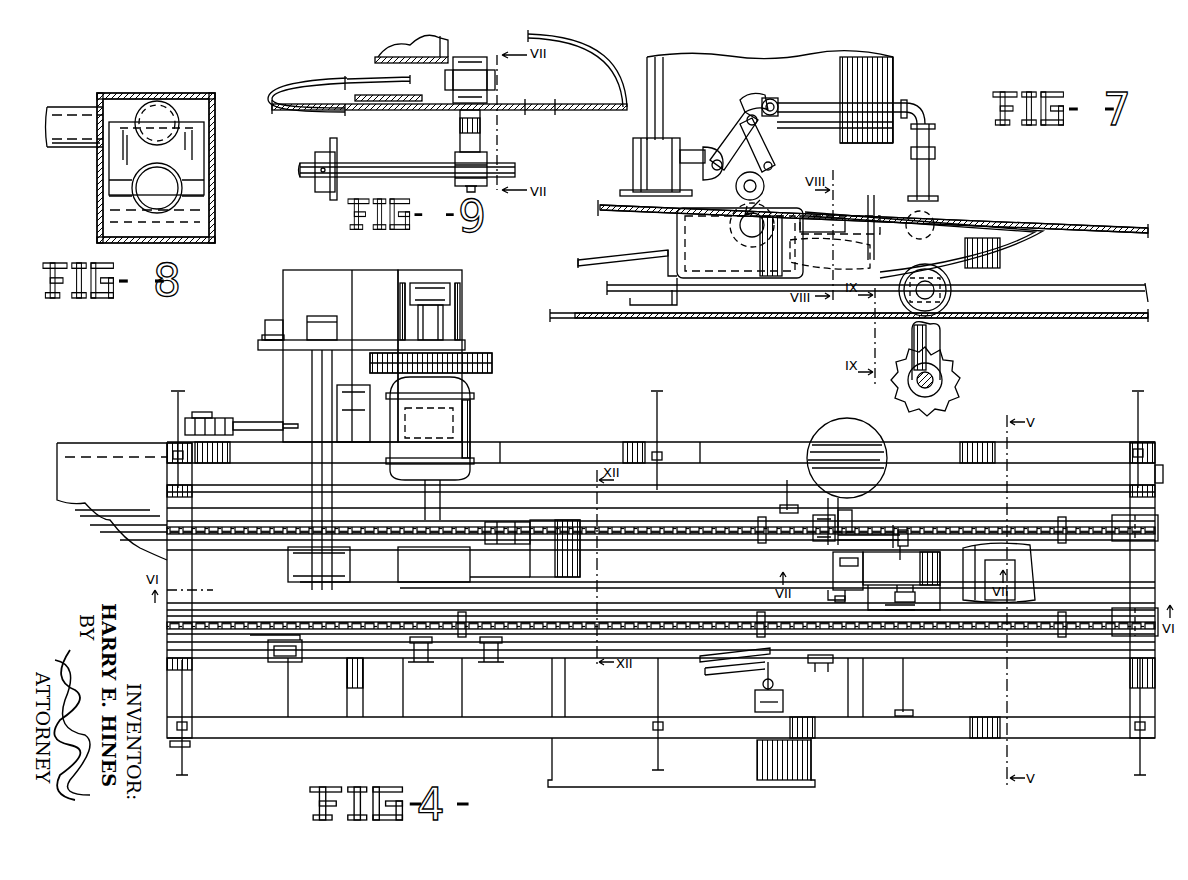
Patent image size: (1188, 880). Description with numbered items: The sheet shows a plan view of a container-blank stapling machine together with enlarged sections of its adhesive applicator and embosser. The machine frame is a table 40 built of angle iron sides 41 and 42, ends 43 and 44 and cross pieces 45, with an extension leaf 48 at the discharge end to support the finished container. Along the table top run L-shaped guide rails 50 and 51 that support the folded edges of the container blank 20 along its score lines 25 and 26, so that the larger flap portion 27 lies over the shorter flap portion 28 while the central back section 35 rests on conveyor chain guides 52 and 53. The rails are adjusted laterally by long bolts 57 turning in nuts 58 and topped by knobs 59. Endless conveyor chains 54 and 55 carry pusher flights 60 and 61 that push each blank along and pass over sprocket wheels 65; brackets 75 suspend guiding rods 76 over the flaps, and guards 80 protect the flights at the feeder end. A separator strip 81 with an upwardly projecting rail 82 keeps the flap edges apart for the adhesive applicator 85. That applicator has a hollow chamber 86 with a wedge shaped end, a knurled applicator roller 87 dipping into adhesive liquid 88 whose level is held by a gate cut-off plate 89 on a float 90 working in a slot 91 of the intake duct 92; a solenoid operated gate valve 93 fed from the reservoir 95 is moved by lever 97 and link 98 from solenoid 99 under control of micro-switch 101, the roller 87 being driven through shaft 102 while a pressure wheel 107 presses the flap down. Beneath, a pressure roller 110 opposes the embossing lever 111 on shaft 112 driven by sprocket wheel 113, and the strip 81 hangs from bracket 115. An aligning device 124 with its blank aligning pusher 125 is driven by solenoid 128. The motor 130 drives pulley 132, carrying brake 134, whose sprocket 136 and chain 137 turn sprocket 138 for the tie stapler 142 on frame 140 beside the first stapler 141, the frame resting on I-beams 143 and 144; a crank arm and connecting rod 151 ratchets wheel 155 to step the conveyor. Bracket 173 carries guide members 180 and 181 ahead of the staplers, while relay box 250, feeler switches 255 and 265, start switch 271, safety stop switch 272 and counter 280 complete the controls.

In FIG. 9, the container blank 20 is at (538, 98).
In FIG. 7, the container blank 20 is at (1018, 213).
In FIG. 9, the score line 25 is at (615, 112).
In FIG. 9, the score line 26 is at (285, 112).
In FIG. 9, the larger flap portion 27 is at (575, 40).
In FIG. 7, the larger flap portion 27 is at (612, 192).
In FIG. 4, the larger flap portion 27 is at (1032, 560).
In FIG. 9, the shorter flap portion 28 is at (366, 80).
In FIG. 7, the shorter flap portion 28 is at (607, 288).
In FIG. 4, the shorter flap portion 28 is at (1060, 548).
In FIG. 9, the central back section 35 is at (512, 98).
In FIG. 7, the central back section 35 is at (1020, 320).
In FIG. 4, the central back section 35 is at (1032, 589).
In FIG. 4, the table 40 is at (1150, 565).
In FIG. 4, the side 41 is at (748, 435).
In FIG. 4, the side 42 is at (880, 742).
In FIG. 4, the end 43 is at (170, 685).
In FIG. 4, the end 44 is at (1155, 675).
In FIG. 4, the cross piece 45 is at (363, 695).
In FIG. 4, the extension leaf 48 is at (118, 494).
In FIG. 4, the guide rail 50 is at (192, 645).
In FIG. 4, the guide rail 51 is at (243, 484).
In FIG. 4, the conveyor chain guide 52 is at (1075, 538).
In FIG. 4, the conveyor chain guide 53 is at (990, 640).
In FIG. 4, the conveyor sprocket chain 54 is at (215, 545).
In FIG. 4, the conveyor sprocket chain 55 is at (245, 618).
In FIG. 4, the long bolt 57 is at (176, 402).
In FIG. 4, the nut 58 is at (187, 728).
In FIG. 4, the adjusting knob 59 is at (176, 390).
In FIG. 4, the pusher flight 60 is at (468, 481).
In FIG. 4, the pusher flight 61 is at (460, 612).
In FIG. 4, the sprocket wheel 65 is at (901, 580).
In FIG. 4, the bracket 75 is at (815, 672).
In FIG. 4, the guiding rod 76 is at (724, 605).
In FIG. 4, the conveyor flight guard 80 is at (1140, 515).
In FIG. 9, the separator strip 81 is at (385, 100).
In FIG. 7, the separator strip 81 is at (575, 320).
In FIG. 4, the separator strip 81 is at (652, 583).
In FIG. 4, the upwardly projecting rail 82 is at (702, 582).
In FIG. 7, the adhesive applicator 85 is at (960, 200).
In FIG. 8, the hollow chamber 86 is at (214, 105).
In FIG. 9, the hollow chamber 86 is at (378, 52).
In FIG. 7, the hollow chamber 86 is at (980, 232).
In FIG. 7, the applicator roller 87 is at (737, 228).
In FIG. 4, the applicator roller 87 is at (861, 591).
In FIG. 8, the adhesive liquid 88 is at (188, 232).
In FIG. 7, the adhesive liquid 88 is at (847, 255).
In FIG. 8, the gate cut-off plate 89 is at (190, 143).
In FIG. 7, the gate cut-off plate 89 is at (860, 215).
In FIG. 8, the float 90 is at (181, 180).
In FIG. 7, the float 90 is at (920, 240).
In FIG. 8, the slot 91 is at (178, 110).
In FIG. 7, the slot 91 is at (870, 195).
In FIG. 8, the intake duct 92 is at (66, 104).
In FIG. 7, the intake duct 92 is at (920, 108).
In FIG. 4, the intake duct 92 is at (880, 535).
In FIG. 7, the solenoid operated gate valve 93 is at (776, 100).
In FIG. 4, the solenoid operated gate valve 93 is at (855, 480).
In FIG. 7, the adhesive supply reservoir 95 is at (893, 65).
In FIG. 4, the adhesive supply reservoir 95 is at (815, 432).
In FIG. 7, the lever 97 is at (775, 150).
In FIG. 7, the link 98 is at (735, 118).
In FIG. 7, the solenoid 99 is at (663, 135).
In FIG. 4, the solenoid 99 is at (825, 528).
In FIG. 4, the micro-switch 101 is at (786, 482).
In FIG. 7, the shaft 102 is at (745, 253).
In FIG. 4, the shaft 102 is at (840, 555).
In FIG. 7, the pressure wheel 107 is at (762, 180).
In FIG. 9, the pressure roller 110 is at (472, 57).
In FIG. 7, the pressure roller 110 is at (950, 290).
In FIG. 4, the pressure roller 110 is at (924, 597).
In FIG. 9, the embossing lever 111 is at (480, 128).
In FIG. 7, the embossing lever 111 is at (940, 342).
In FIG. 4, the embossing lever 111 is at (893, 605).
In FIG. 9, the shaft 112 is at (487, 160).
In FIG. 7, the shaft 112 is at (933, 383).
In FIG. 4, the shaft 112 is at (905, 690).
In FIG. 9, the sprocket wheel 113 is at (337, 148).
In FIG. 7, the sprocket wheel 113 is at (942, 372).
In FIG. 7, the bracket 115 is at (672, 278).
In FIG. 4, the lever 124 is at (705, 660).
In FIG. 4, the blank aligning pusher 125 is at (720, 676).
In FIG. 4, the solenoid 128 is at (783, 700).
In FIG. 4, the electric motor 130 is at (470, 430).
In FIG. 4, the driving pulley 132 is at (475, 352).
In FIG. 4, the friction brake 134 is at (450, 290).
In FIG. 4, the driving sprocket wheel 136 is at (443, 322).
In FIG. 4, the sprocket chain 137 is at (392, 320).
In FIG. 4, the sprocket 138 is at (335, 295).
In FIG. 4, the frame 140 is at (265, 318).
In FIG. 4, the first stapler 141 is at (434, 564).
In FIG. 4, the tie stapler device 142 is at (319, 564).
In FIG. 4, the I-beam 143 is at (410, 272).
In FIG. 4, the I-beam 144 is at (310, 272).
In FIG. 4, the crank arm and connecting rod 151 is at (245, 410).
In FIG. 4, the ratchet wheel 155 is at (195, 410).
In FIG. 4, the bracket 173 is at (480, 548).
In FIG. 4, the guide member 180 is at (565, 550).
In FIG. 4, the guide member 181 is at (530, 575).
In FIG. 4, the box 250 is at (815, 765).
In FIG. 4, the micro-switch 255 is at (480, 660).
In FIG. 4, the feeler switch 265 is at (413, 660).
In FIG. 4, the start and stop switch 271 is at (1163, 470).
In FIG. 4, the safety stop switch 272 is at (190, 747).
In FIG. 4, the counter 280 is at (270, 662).